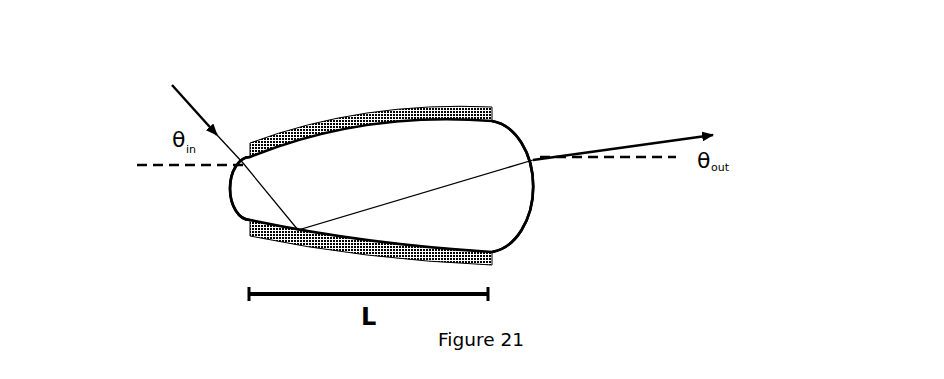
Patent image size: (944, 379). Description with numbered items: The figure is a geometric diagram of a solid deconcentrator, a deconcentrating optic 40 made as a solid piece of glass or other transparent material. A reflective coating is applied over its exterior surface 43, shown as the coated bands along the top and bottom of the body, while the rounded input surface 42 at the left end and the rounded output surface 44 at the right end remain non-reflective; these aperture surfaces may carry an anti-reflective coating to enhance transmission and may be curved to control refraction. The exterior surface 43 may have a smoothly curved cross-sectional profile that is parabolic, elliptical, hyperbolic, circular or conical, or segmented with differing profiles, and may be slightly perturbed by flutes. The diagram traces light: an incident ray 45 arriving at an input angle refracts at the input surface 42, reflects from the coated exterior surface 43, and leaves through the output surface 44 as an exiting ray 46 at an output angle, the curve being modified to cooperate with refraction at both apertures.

The deconcentrating optic 40 is at (543, 53).
The input surface 42 is at (173, 228).
The exterior surface 43 is at (371, 156).
The output surface 44 is at (592, 211).
The incident ray 45 is at (279, 144).
The exiting ray 46 is at (688, 131).